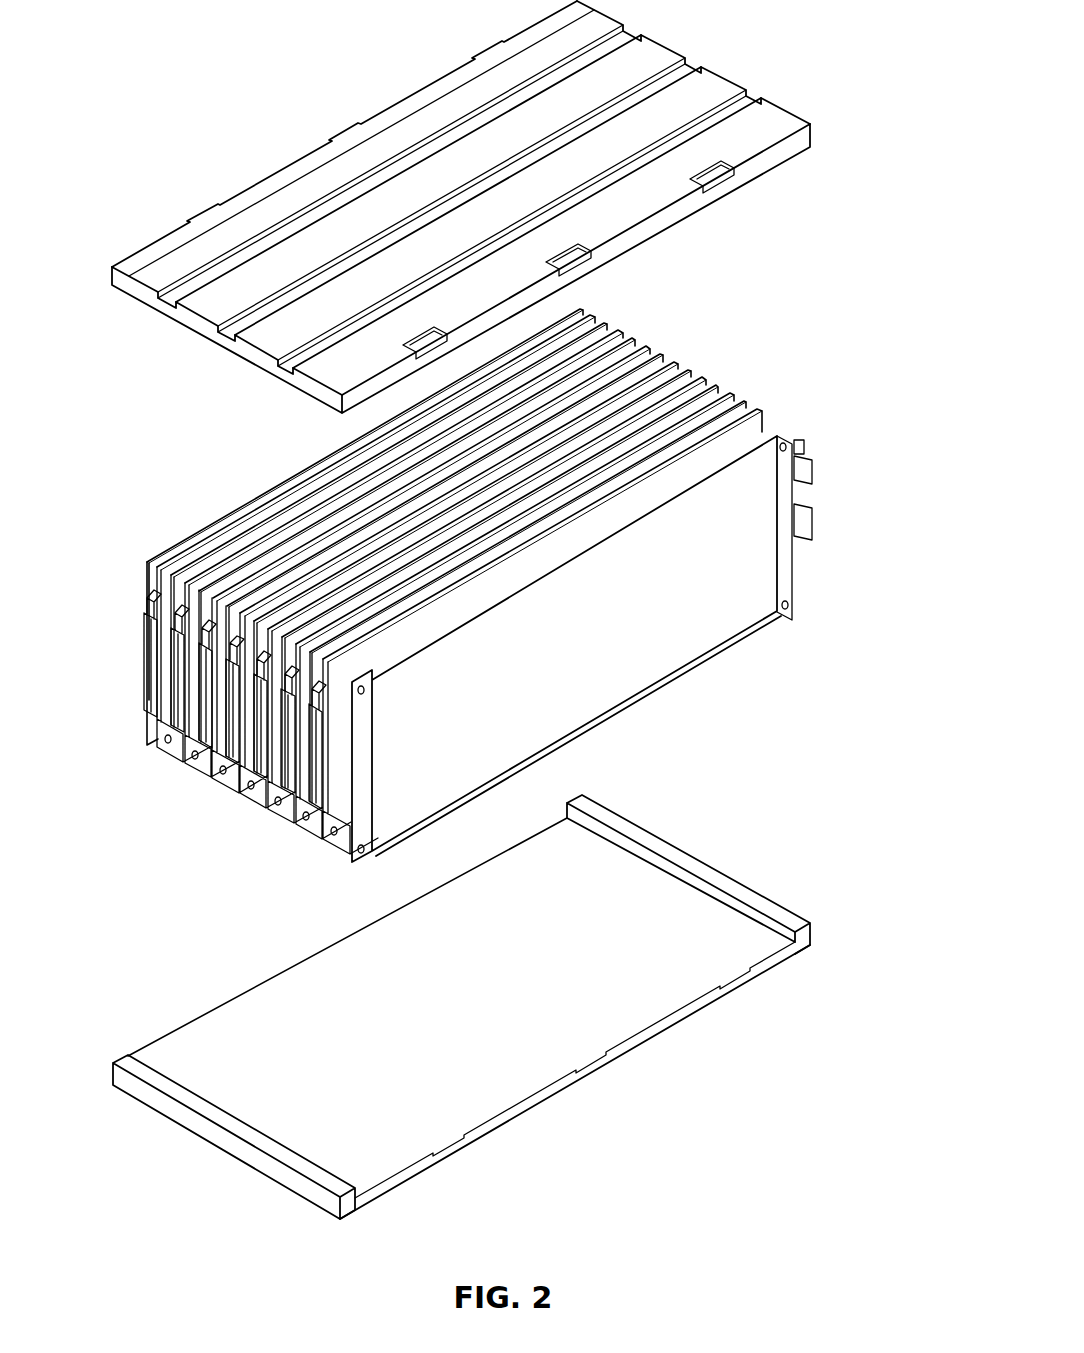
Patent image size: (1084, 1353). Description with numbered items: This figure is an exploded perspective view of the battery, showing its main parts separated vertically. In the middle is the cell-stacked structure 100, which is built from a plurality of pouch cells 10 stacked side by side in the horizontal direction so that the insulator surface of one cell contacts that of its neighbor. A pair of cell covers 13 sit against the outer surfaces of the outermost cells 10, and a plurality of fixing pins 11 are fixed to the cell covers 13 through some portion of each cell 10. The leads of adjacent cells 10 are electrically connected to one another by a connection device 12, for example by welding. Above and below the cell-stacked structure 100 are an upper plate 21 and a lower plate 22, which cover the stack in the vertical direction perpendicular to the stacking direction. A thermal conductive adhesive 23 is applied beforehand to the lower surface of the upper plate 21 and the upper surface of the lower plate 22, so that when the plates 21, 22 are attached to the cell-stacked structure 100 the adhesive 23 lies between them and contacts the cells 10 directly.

The cell-stacked structure 100 is at (500, 585).
The cell 10 is at (773, 420).
The fixing pin 11 is at (142, 584).
The connection device 12 is at (148, 665).
The cell cover 13 is at (753, 573).
The upper plate 21 is at (443, 105).
The lower plate 22 is at (461, 1013).
The thermal conductive adhesive 23 is at (213, 1037).